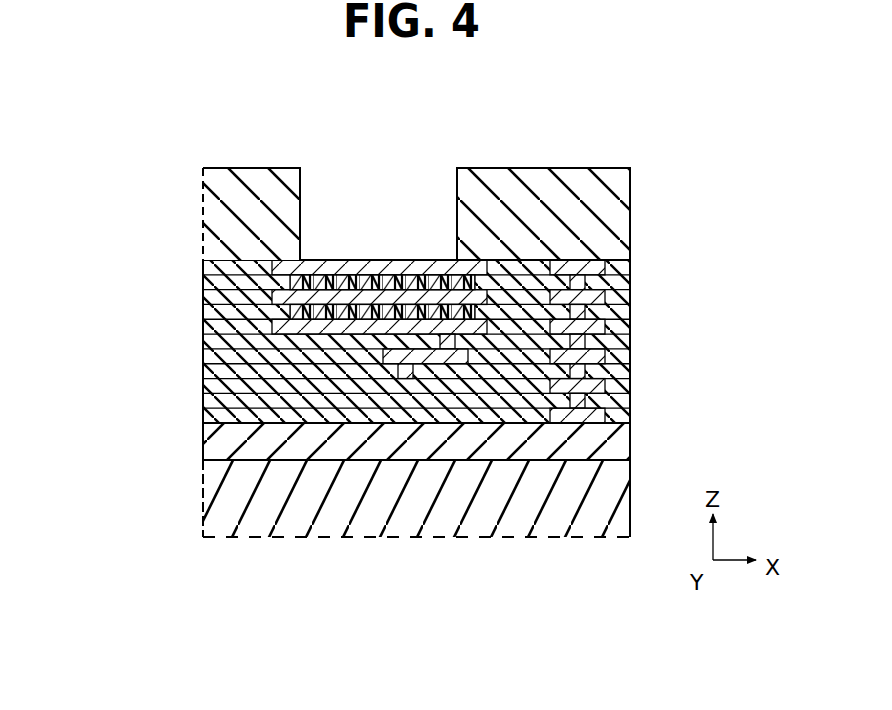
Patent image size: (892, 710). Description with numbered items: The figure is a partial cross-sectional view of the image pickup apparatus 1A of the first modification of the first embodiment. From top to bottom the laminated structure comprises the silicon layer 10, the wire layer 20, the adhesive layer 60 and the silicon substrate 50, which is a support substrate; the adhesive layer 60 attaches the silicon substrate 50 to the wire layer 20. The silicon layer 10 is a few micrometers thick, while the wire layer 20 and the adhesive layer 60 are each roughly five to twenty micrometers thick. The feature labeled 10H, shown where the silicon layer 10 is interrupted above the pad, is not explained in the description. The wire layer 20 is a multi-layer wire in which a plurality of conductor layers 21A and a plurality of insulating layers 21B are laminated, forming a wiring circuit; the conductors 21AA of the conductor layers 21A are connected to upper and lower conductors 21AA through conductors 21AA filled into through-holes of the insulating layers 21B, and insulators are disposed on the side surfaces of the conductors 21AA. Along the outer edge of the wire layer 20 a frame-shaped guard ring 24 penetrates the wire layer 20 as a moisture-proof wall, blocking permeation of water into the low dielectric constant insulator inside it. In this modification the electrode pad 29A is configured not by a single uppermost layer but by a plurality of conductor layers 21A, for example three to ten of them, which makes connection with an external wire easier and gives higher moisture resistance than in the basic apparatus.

The image pickup apparatus 1A is at (84, 132).
The silicon layer 10 is at (203, 215).
The opening 10H is at (378, 190).
The wire layer 20 is at (107, 292).
The conductor layers 21A is at (205, 292).
The insulating layers 21B is at (205, 331).
The conductors 21AA is at (631, 262).
The guard ring 24 is at (583, 261).
The electrode pad 29A is at (427, 261).
The silicon substrate 50 is at (205, 498).
The adhesive layer 60 is at (205, 453).